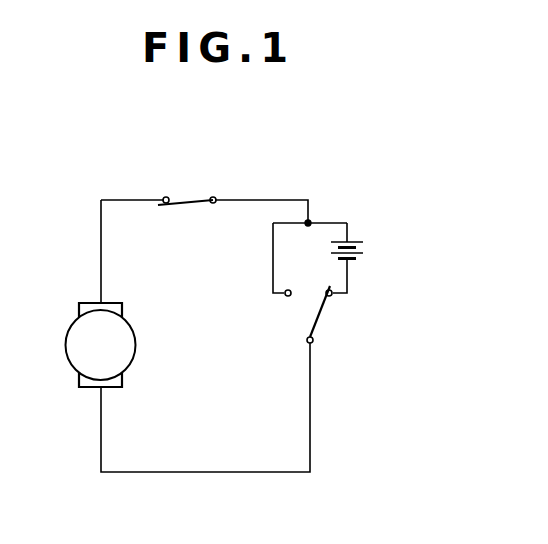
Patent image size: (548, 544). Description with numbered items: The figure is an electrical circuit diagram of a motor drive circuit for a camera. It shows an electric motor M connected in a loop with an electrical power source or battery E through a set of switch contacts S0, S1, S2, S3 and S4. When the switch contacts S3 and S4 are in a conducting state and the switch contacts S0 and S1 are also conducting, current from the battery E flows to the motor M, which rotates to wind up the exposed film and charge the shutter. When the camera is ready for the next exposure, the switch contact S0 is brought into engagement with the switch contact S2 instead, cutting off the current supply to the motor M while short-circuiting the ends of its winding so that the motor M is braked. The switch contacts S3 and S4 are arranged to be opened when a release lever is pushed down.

The electric motor M is at (101, 345).
The electrical power source or battery E is at (361, 254).
The switch contact S0 is at (326, 352).
The switch contact S1 is at (335, 311).
The switch contact S2 is at (290, 310).
The switch contact S3 is at (213, 185).
The switch contact S4 is at (183, 186).